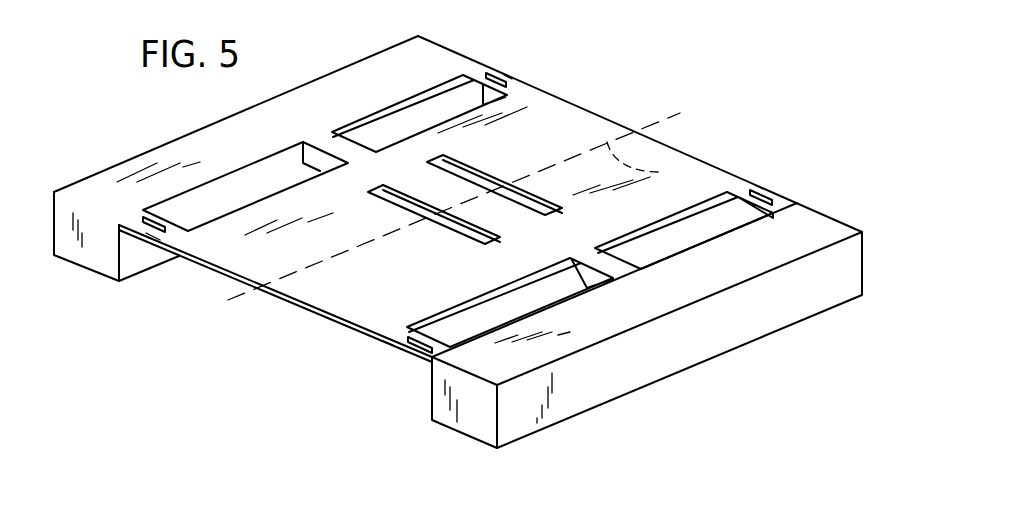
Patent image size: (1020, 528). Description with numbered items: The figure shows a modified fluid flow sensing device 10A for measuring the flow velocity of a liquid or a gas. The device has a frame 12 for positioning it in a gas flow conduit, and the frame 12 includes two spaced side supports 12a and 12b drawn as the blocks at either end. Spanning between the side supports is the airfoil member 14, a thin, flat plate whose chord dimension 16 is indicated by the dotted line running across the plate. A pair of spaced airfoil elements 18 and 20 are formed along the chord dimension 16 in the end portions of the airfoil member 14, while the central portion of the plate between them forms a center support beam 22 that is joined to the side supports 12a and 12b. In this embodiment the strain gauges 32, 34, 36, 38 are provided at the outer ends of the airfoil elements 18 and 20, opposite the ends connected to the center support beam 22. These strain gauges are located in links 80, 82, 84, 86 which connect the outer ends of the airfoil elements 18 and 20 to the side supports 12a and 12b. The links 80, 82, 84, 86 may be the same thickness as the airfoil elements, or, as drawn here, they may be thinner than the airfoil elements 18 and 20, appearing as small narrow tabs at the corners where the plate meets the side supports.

The fluid flow sensing device 10A is at (687, 93).
The frame 12 is at (700, 373).
The side support 12a is at (95, 183).
The side support 12b is at (813, 225).
The airfoil member 14 is at (280, 258).
The chord dimension 16 is at (454, 206).
The airfoil element 18 is at (317, 292).
The airfoil element 20 is at (582, 120).
The center support beam 22 is at (330, 143).
The strain gauge 32 is at (150, 218).
The strain gauge 34 is at (427, 340).
The strain gauge 36 is at (490, 78).
The strain gauge 38 is at (768, 188).
The link 80 is at (153, 237).
The link 82 is at (392, 343).
The link 84 is at (508, 77).
The link 86 is at (758, 187).